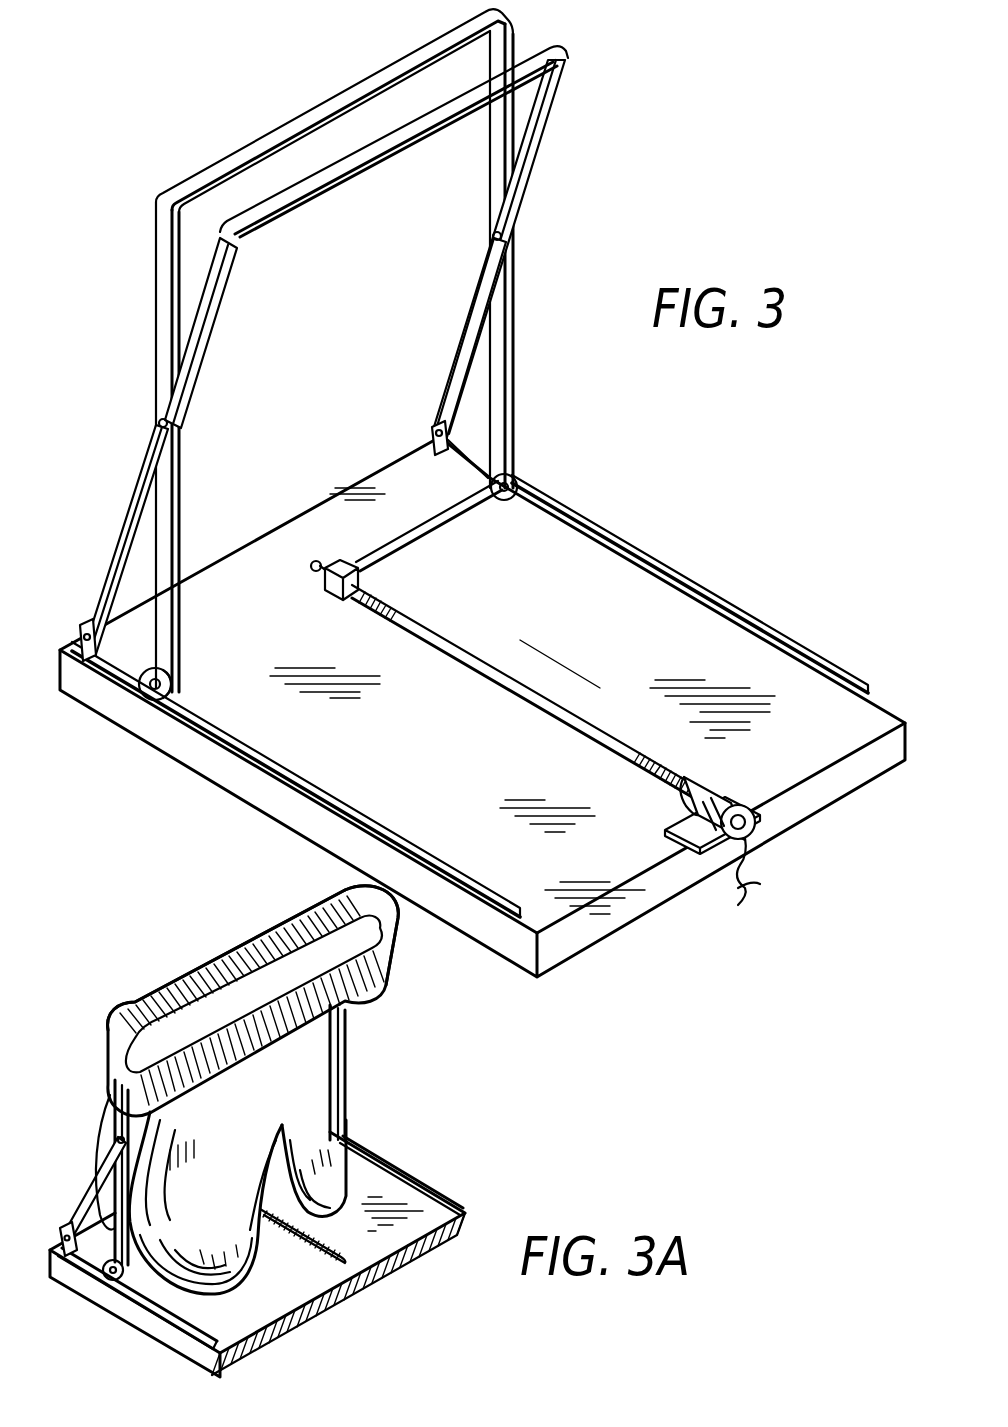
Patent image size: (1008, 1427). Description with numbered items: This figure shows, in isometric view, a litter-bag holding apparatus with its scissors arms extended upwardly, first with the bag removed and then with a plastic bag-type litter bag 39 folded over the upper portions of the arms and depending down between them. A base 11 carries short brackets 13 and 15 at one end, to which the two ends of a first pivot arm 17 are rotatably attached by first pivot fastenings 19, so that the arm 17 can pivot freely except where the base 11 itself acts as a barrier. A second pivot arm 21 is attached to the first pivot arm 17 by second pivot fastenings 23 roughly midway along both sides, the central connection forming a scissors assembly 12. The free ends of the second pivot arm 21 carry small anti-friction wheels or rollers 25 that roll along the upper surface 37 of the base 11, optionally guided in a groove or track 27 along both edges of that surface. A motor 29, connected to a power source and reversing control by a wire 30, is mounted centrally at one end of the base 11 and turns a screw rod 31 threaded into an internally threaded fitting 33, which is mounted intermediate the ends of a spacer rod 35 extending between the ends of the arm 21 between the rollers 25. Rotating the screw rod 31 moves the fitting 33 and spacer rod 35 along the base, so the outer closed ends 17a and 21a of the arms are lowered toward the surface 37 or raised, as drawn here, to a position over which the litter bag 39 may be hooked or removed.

In FIG. 3, the base 11 is at (627, 548).
In FIG. 3A, the base 11 is at (380, 1180).
In FIG. 3, the scissors assembly 12 is at (115, 424).
In FIG. 3, the bracket 13 is at (86, 706).
In FIG. 3A, the bracket 13 is at (68, 1285).
In FIG. 3, the bracket 15 is at (446, 455).
In FIG. 3, the first pivot arm 17 is at (130, 514).
In FIG. 3A, the first pivot arm 17 is at (93, 1177).
In FIG. 3, the outer closed end of first pivot arm 17a is at (350, 165).
In FIG. 3A, the outer closed end of first pivot arm 17a is at (345, 960).
In FIG. 3, the first pivot fastening 19 is at (436, 434).
In FIG. 3A, the first pivot fastening 19 is at (62, 1235).
In FIG. 3, the second pivot arm 21 is at (512, 382).
In FIG. 3A, the second pivot arm 21 is at (345, 1070).
In FIG. 3, the outer closed end of second pivot arm 21a is at (275, 135).
In FIG. 3A, the outer closed end of second pivot arm 21a is at (205, 965).
In FIG. 3, the second pivot fastening 23 is at (495, 238).
In FIG. 3A, the second pivot fastening 23 is at (118, 1140).
In FIG. 3, the anti-friction wheel or roller 25 is at (516, 488).
In FIG. 3A, the anti-friction wheel or roller 25 is at (113, 1278).
In FIG. 3, the groove or track 27 is at (706, 612).
In FIG. 3A, the groove or track 27 is at (410, 1190).
In FIG. 3, the motor 29 is at (712, 790).
In FIG. 3, the wire 30 is at (738, 895).
In FIG. 3, the screw rod means 31 is at (575, 722).
In FIG. 3A, the screw rod means 31 is at (302, 1252).
In FIG. 3, the internally threaded fitting 33 is at (343, 568).
In FIG. 3, the spacer rod 35 is at (432, 548).
In FIG. 3, the upper surface of base 37 is at (515, 637).
In FIG. 3A, the litter bag 39 is at (205, 1182).